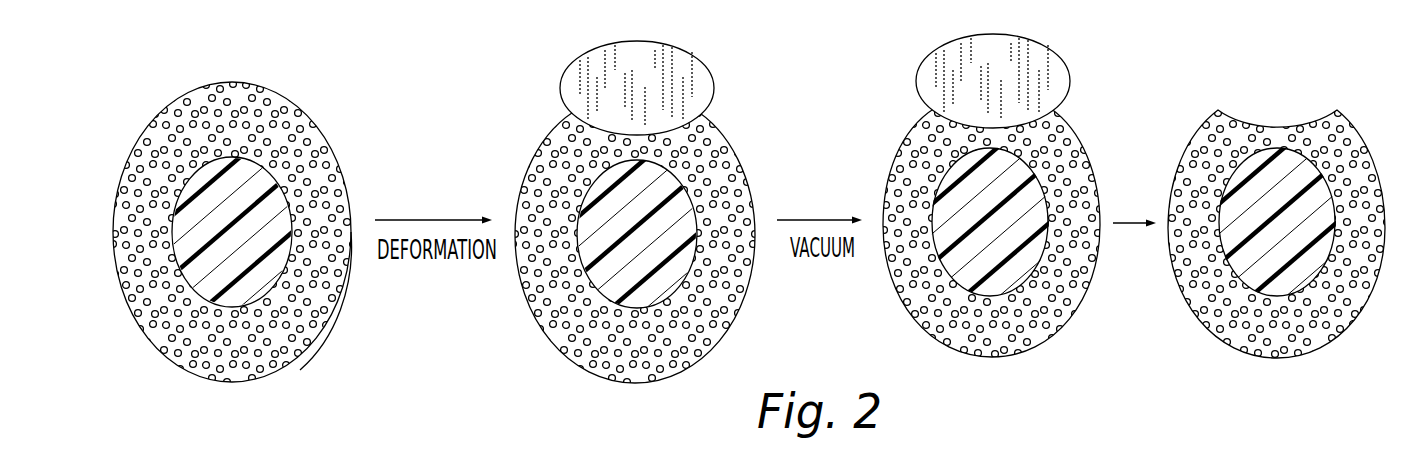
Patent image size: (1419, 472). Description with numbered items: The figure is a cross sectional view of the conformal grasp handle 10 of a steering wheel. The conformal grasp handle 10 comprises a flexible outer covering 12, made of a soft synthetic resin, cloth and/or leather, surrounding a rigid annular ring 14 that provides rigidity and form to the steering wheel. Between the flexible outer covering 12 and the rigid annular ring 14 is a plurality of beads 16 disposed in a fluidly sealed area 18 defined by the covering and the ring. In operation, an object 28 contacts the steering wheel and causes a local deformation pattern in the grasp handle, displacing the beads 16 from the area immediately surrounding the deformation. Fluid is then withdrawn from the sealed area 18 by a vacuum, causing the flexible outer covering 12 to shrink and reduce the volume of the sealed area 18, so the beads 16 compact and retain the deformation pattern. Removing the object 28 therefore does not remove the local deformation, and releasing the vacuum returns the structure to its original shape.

The conformal grasp handle 10 is at (270, 233).
The flexible outer covering 12 is at (350, 207).
The rigid annular ring 14 is at (253, 248).
The beads 16 is at (257, 92).
The fluidly sealed area 18 is at (335, 297).
The object 28 is at (688, 50).